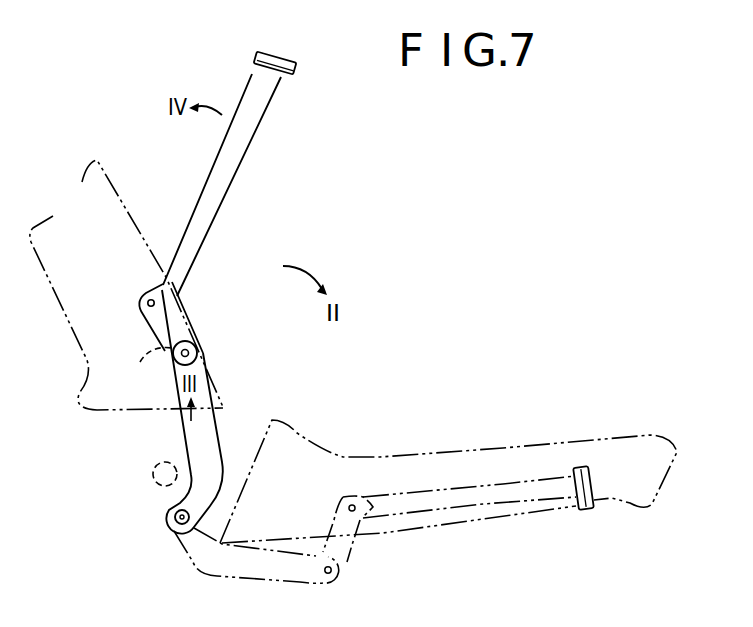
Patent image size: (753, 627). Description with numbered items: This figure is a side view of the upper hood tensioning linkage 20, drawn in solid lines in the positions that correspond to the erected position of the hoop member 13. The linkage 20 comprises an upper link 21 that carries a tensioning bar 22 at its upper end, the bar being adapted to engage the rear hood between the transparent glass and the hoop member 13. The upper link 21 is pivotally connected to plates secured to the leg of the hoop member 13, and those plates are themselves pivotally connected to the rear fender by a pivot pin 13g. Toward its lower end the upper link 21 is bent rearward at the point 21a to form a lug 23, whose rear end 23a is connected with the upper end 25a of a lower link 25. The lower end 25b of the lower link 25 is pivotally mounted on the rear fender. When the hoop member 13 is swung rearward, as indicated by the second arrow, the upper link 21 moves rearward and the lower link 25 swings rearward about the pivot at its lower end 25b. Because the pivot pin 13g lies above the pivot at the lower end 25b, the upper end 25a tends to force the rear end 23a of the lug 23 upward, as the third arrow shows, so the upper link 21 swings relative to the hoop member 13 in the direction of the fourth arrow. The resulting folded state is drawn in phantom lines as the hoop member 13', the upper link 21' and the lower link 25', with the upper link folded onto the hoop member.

The hoop member 13 is at (126, 285).
The hoop member in folded position 13' is at (448, 462).
The pivot pin 13g is at (153, 468).
The upper hood tensioning linkage 20 is at (238, 222).
The upper link 21 is at (225, 185).
The upper link in folded position 21' is at (408, 513).
The bend point 21a is at (170, 302).
The tensioning bar 22 is at (292, 58).
The lug 23 is at (170, 326).
The rear end of lug 23a is at (197, 351).
The lower link 25 is at (212, 412).
The lower link in folded position 25' is at (273, 539).
The upper end of lower link 25a is at (138, 370).
The lower end of lower link 25b is at (172, 512).